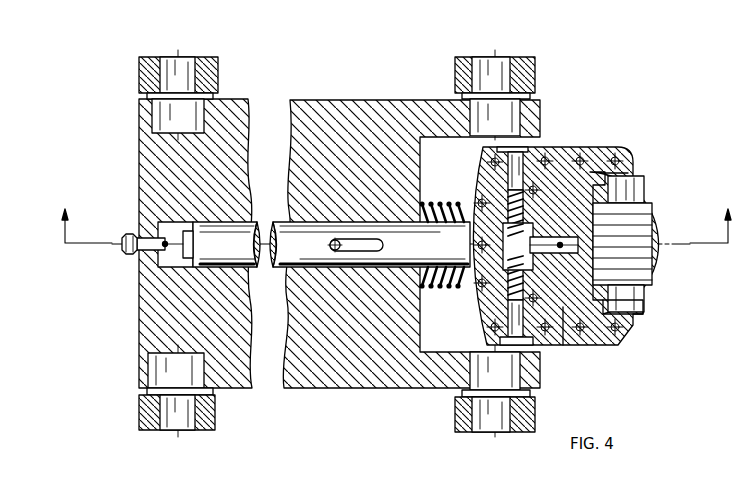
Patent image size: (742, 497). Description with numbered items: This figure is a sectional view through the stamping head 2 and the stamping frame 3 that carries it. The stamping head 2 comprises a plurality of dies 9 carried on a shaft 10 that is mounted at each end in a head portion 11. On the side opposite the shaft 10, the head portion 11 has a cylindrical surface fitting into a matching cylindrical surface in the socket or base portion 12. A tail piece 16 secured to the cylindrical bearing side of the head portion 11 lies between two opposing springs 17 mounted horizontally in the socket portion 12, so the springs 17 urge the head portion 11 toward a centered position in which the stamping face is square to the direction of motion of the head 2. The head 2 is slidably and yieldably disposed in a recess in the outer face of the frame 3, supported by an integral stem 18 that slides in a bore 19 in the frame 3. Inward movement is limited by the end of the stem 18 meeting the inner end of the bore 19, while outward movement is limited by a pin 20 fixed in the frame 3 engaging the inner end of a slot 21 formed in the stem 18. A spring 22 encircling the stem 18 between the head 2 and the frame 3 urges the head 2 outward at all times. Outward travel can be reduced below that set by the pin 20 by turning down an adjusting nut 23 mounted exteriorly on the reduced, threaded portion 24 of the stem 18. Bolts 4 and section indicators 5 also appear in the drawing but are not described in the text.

The stamping head 2 is at (572, 150).
The stamping frame 3 is at (356, 103).
The bolts 4 is at (519, 60).
The section line 5- 5 is at (395, 217).
The dies 9 is at (649, 268).
The shaft 10 is at (636, 316).
The head portion 11 is at (638, 190).
The socket or base portion 12 is at (487, 177).
The tail piece 16 is at (507, 230).
The springs 17 is at (512, 283).
The stem 18 is at (248, 226).
The bore 19 is at (173, 264).
The pin 20 is at (335, 250).
The slot 21 is at (370, 252).
The spring 22 is at (421, 202).
The adjusting nut 23 is at (138, 252).
The reduced, threaded portion 24 is at (128, 252).